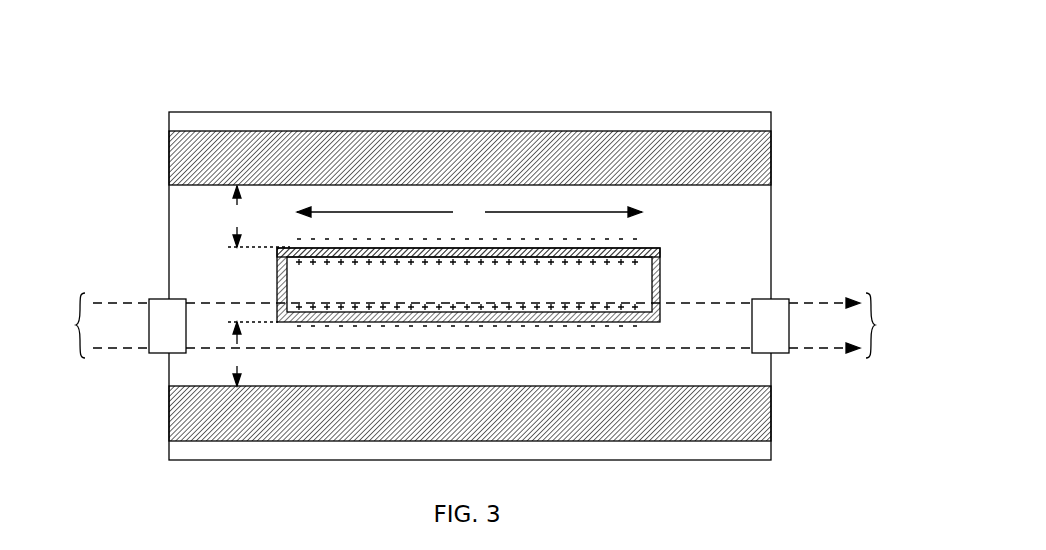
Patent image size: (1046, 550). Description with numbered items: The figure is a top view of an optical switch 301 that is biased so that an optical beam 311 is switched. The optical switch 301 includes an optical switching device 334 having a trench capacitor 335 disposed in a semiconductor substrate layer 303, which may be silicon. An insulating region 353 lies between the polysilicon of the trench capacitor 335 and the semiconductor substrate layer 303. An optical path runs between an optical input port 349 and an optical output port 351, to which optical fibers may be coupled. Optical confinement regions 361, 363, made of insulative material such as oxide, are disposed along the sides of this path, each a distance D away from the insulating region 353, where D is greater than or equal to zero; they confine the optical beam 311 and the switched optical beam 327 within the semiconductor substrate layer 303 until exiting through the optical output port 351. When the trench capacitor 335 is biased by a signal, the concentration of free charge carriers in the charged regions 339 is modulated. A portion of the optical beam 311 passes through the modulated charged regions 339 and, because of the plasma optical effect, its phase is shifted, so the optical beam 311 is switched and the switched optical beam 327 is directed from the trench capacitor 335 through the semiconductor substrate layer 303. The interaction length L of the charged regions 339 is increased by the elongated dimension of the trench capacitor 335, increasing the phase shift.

The optical switch 301 is at (477, 236).
The semiconductor substrate layer 303 is at (771, 218).
The optical beam 311 is at (94, 325).
The switched optical beam 327 is at (851, 325).
The optical switching device 334 is at (645, 222).
The trench capacitor 335 is at (501, 277).
The charged regions 339 is at (278, 326).
The optical input port 349 is at (163, 299).
The optical output port 351 is at (770, 299).
The insulating region 353 is at (660, 249).
The optical confinement region 361 is at (771, 163).
The optical confinement region 363 is at (771, 418).